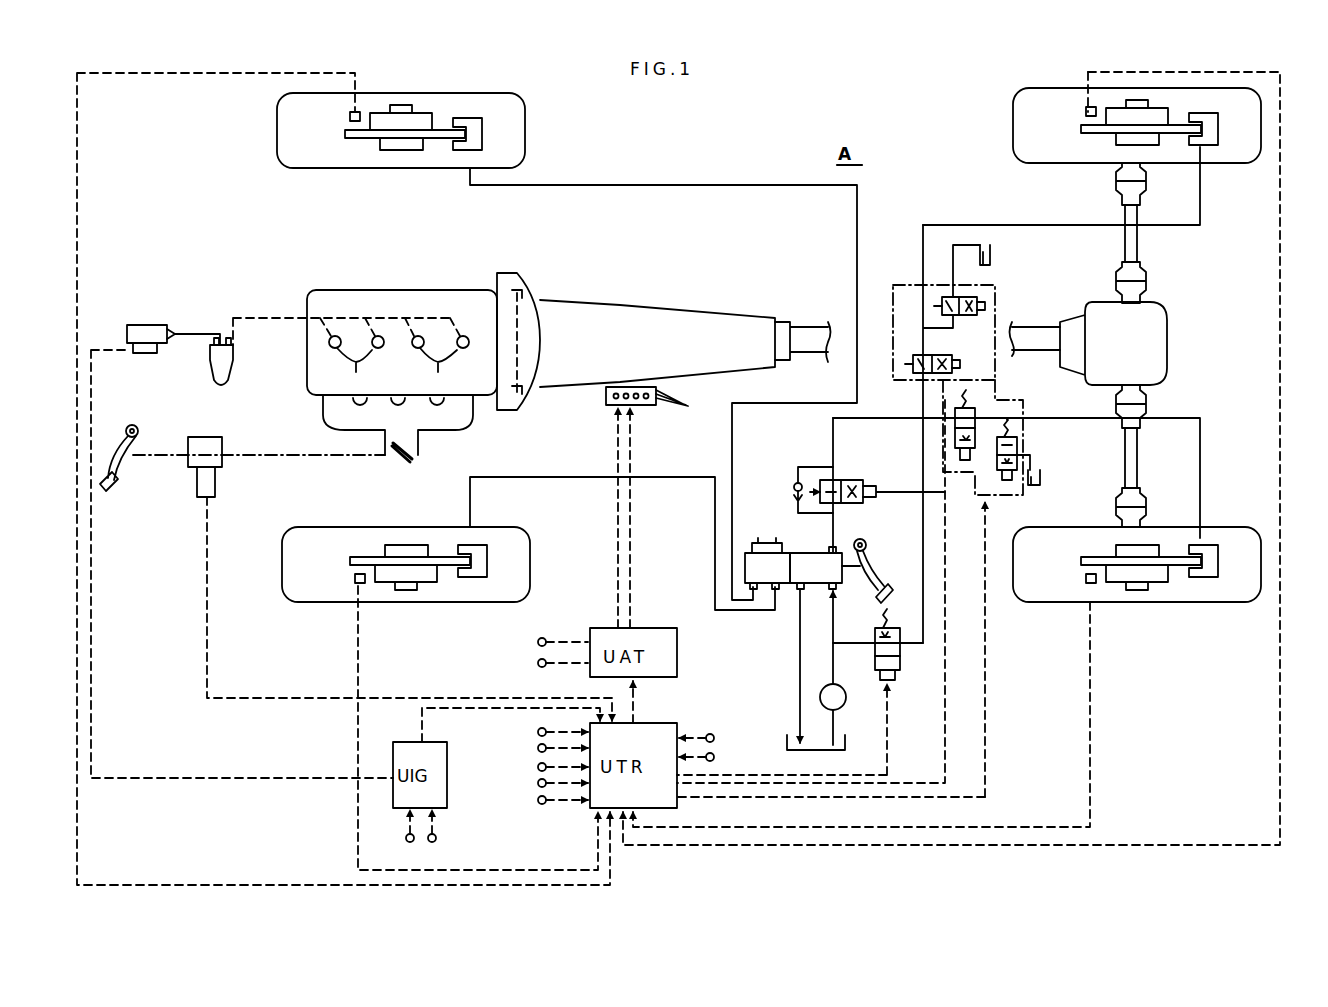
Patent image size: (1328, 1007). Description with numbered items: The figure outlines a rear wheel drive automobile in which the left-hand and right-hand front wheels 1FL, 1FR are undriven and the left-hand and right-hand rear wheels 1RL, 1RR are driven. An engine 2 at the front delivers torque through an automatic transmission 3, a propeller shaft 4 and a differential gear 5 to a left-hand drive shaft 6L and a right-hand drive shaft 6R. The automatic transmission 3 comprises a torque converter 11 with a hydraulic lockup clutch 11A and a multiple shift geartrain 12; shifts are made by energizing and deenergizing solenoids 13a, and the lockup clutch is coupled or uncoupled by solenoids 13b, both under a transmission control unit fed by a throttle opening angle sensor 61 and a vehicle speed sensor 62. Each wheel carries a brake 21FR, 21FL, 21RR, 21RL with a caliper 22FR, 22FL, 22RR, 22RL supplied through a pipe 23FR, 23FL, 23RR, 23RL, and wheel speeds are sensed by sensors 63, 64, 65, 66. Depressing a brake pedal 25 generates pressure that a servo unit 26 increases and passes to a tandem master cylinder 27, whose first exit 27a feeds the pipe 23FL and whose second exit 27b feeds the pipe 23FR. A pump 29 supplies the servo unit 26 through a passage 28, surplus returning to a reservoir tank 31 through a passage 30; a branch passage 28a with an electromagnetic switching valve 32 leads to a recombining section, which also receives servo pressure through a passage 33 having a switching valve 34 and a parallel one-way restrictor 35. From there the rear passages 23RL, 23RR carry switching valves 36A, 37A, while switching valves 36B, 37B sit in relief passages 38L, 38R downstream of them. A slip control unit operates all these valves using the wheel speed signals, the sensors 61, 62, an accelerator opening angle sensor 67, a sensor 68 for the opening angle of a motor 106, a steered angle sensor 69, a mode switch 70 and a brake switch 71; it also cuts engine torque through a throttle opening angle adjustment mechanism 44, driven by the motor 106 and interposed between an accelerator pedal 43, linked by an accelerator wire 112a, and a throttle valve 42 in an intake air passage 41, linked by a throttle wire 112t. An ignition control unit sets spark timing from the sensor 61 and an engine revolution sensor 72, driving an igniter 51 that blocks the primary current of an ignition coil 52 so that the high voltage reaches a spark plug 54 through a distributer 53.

The right-hand front wheel 1FR is at (296, 169).
The left-hand front wheel 1FL is at (296, 603).
The right-hand rear wheel 1RR is at (1013, 112).
The left-hand rear wheel 1RL is at (1200, 602).
The brake 21FR is at (448, 110).
The brake 21FL is at (450, 578).
The brake 21RR is at (1168, 107).
The brake 21RL is at (1175, 580).
The caliper 22FR is at (485, 130).
The caliper 22FL is at (487, 548).
The caliper 22RR is at (1215, 140).
The caliper 22RL is at (1212, 545).
The braking pipe 23FR is at (683, 185).
The braking pipe 23FL is at (523, 478).
The braking passage 23RR is at (960, 225).
The braking passage 23RL is at (1200, 433).
The wheel speed sensor 63 is at (350, 117).
The wheel speed sensor 64 is at (352, 579).
The wheel speed sensor 65 is at (1086, 113).
The wheel speed sensor 66 is at (1085, 578).
The engine 2 is at (388, 292).
The automatic transmission 3 is at (633, 285).
The torque converter 11 is at (518, 295).
The lockup clutch 11A is at (526, 396).
The multiple shift geartrain 12 is at (685, 305).
The solenoids 13a is at (685, 403).
The solenoids 13b is at (608, 402).
The propeller shaft 4 is at (808, 322).
The differential gear 5 is at (1165, 345).
The right-hand drive shaft 6R is at (1125, 246).
The left-hand drive shaft 6L is at (1125, 470).
The spark plug 54 is at (351, 354).
The ignition coil 52 is at (151, 325).
The igniter 51 is at (143, 354).
The distributer 53 is at (210, 372).
The throttle opening angle adjustment mechanism 44 is at (216, 435).
The accelerator pedal 43 is at (108, 495).
The accelerator wire 112a is at (147, 458).
The motor 106 is at (216, 485).
The throttle wire 112t is at (320, 458).
The intake air passage 41 is at (385, 460).
The throttle valve 42 is at (412, 459).
The brake pedal 25 is at (880, 583).
The servo unit 26 is at (805, 553).
The master cylinder 27 is at (762, 542).
The first exit 27a is at (776, 590).
The second exit 27b is at (732, 588).
The passage 28 is at (840, 680).
The branch passage 28a is at (923, 645).
The pump 29 is at (845, 705).
The passage 30 is at (798, 685).
The reservoir tank 31 is at (790, 742).
The switching valve 32 is at (878, 625).
The passage 33 is at (845, 420).
The switching valve 34 is at (862, 483).
The one-way restrictor 35 is at (796, 482).
The switching valve 36A is at (985, 395).
The switching valve 36B is at (1020, 445).
The switching valve 37A is at (935, 356).
The switching valve 37B is at (945, 296).
The relief passage 38R is at (953, 245).
The relief passage 38L is at (1032, 460).
The throttle opening angle sensor 61 is at (538, 663).
The vehicle speed sensor 62 is at (538, 642).
The accelerator opening angle sensor 67 is at (538, 732).
The motor opening angle sensor 68 is at (538, 750).
The steered angle sensor 69 is at (538, 769).
The mode switch 70 is at (713, 734).
The brake switch 71 is at (714, 756).
The engine revolution sensor 72 is at (436, 842).